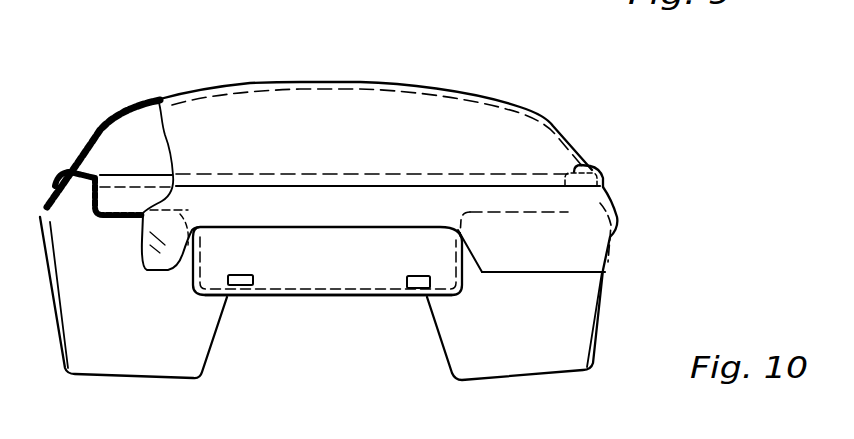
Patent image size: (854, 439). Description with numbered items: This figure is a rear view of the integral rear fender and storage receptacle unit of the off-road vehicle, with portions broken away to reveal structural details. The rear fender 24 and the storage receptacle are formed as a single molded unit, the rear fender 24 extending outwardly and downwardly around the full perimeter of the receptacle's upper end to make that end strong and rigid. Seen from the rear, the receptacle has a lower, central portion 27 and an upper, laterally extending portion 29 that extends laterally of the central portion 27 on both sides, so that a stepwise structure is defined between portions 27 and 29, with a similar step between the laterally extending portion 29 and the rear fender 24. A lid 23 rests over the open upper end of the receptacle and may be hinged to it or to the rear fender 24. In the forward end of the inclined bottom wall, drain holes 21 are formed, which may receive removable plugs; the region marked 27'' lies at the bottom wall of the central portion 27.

The drain hole 21 is at (239, 287).
The lid 23 is at (250, 82).
The rear fender 24 is at (603, 302).
The lower, central portion 27 is at (327, 302).
The recess lower edge 27'' is at (328, 323).
The upper, laterally extending portion 29 is at (515, 212).